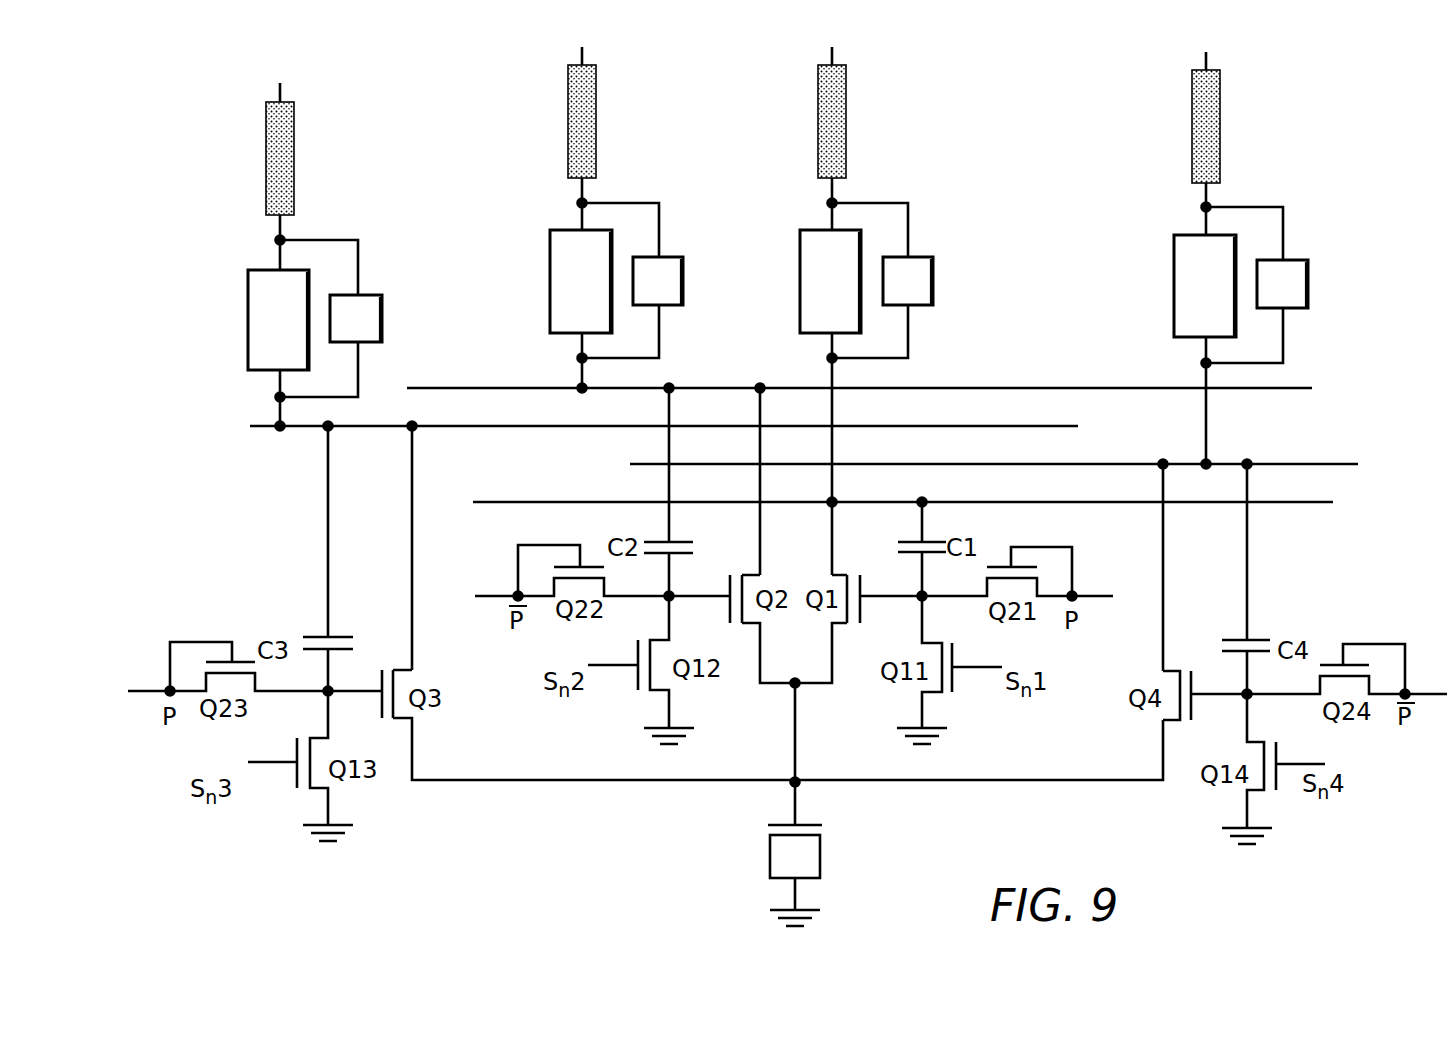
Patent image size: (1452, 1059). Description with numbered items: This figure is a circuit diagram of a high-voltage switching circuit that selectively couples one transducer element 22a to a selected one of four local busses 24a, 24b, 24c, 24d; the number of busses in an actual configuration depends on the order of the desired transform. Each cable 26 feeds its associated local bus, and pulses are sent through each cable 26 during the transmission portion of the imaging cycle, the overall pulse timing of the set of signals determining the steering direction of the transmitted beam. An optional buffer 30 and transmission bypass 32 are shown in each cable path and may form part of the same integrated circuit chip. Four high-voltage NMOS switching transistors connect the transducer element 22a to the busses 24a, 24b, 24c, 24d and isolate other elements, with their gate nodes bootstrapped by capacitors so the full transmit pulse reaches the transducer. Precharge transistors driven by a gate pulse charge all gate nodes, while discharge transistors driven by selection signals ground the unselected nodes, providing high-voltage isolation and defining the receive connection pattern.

The cable 26 is at (297, 168).
The buffer 30 is at (248, 318).
The transmission bypass 32 is at (382, 318).
The local bus 24a is at (902, 387).
The local bus 24b is at (870, 426).
The local bus 24c is at (1229, 463).
The local bus 24d is at (887, 501).
The transducer element 22a is at (780, 858).